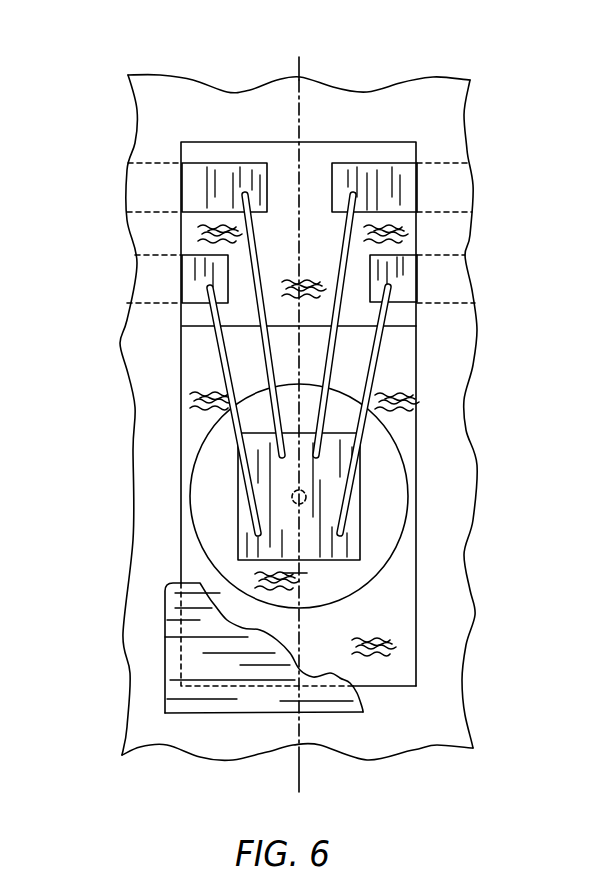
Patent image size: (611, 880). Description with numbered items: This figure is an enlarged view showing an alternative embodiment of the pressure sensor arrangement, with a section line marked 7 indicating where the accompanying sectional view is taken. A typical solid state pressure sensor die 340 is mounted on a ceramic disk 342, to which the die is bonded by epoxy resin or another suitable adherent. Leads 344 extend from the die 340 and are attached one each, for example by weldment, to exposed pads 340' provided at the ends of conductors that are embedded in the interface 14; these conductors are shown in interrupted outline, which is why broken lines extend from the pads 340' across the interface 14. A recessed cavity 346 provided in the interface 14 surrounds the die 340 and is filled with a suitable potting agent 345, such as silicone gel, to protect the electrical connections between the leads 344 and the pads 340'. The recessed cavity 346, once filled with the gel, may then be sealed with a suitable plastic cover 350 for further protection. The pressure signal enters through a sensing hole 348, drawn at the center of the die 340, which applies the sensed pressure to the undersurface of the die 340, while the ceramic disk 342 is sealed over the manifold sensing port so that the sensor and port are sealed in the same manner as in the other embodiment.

The interface 14 is at (127, 155).
The exposed pads 340' is at (291, 174).
The solid state pressure sensor die 340 is at (385, 496).
The ceramic disk 342 is at (393, 444).
The leads 344 is at (270, 390).
The potting agent 345 is at (375, 637).
The recessed cavity 346 is at (178, 565).
The sensing hole 348 is at (291, 497).
The plastic cover 350 is at (199, 716).
The section line 7- 7 is at (299, 57).